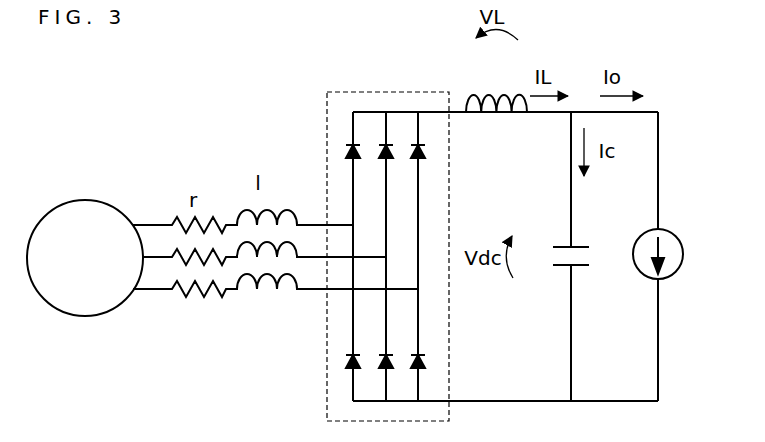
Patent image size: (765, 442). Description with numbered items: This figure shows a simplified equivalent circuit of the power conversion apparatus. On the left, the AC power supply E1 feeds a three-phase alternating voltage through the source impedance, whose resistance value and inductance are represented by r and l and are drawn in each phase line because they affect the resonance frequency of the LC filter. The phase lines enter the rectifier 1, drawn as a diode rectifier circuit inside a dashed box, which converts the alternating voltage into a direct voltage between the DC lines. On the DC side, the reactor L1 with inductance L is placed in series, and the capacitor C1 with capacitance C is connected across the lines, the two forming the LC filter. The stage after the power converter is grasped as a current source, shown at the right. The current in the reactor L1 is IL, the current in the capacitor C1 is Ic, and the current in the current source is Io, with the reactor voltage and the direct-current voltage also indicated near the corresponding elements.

The rectifier 1 is at (436, 104).
The AC power supply E1 is at (93, 206).
The reactor L1 is at (493, 93).
The capacitor C1 is at (583, 246).